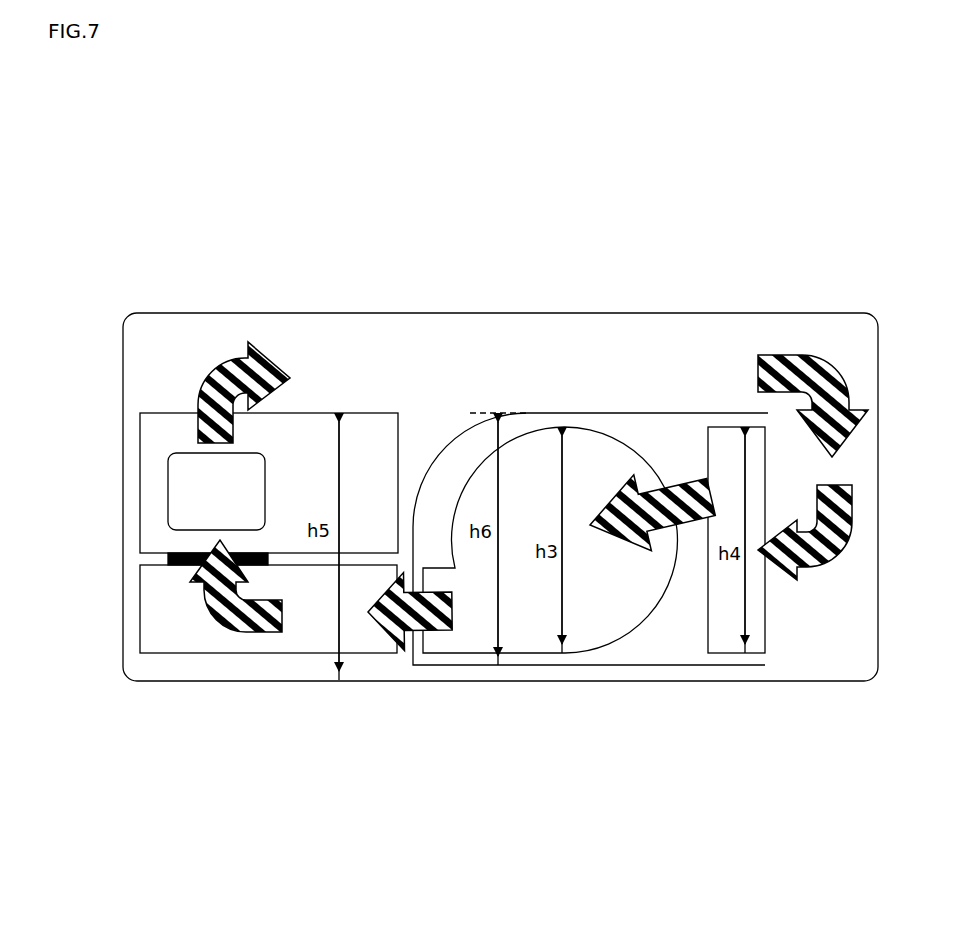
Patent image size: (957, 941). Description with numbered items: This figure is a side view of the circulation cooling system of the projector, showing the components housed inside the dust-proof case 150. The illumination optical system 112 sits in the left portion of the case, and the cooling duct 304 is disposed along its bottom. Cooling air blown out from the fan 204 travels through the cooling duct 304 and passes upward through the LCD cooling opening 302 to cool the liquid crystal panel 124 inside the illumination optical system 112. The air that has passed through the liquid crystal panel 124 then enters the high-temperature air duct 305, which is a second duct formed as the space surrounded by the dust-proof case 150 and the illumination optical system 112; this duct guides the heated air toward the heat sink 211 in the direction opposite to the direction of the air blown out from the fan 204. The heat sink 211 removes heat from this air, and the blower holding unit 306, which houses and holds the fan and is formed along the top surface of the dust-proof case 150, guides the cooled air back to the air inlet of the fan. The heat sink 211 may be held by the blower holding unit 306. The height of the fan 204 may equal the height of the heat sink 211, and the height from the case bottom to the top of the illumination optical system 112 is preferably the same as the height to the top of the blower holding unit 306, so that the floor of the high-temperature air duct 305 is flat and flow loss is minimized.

The illumination optical system 112 is at (310, 428).
The liquid crystal panel 124 is at (182, 466).
The high-temperature air duct 305 is at (471, 360).
The blower holding unit 306 is at (660, 412).
The cooling duct 304 is at (190, 635).
The LCD cooling opening 302 is at (180, 566).
The dust-proof case 150 is at (378, 682).
The fan 204 is at (582, 637).
The heat sink 211 is at (733, 646).